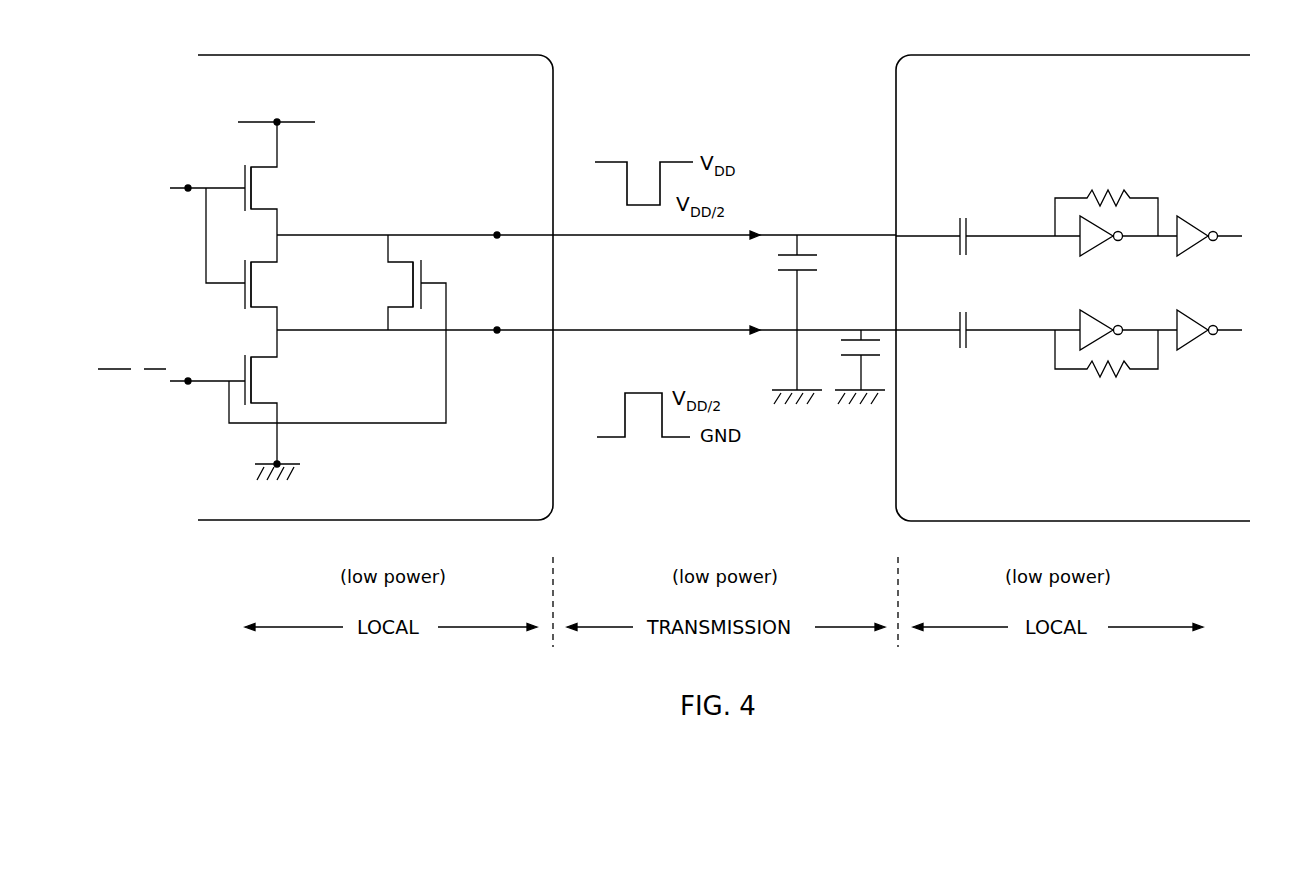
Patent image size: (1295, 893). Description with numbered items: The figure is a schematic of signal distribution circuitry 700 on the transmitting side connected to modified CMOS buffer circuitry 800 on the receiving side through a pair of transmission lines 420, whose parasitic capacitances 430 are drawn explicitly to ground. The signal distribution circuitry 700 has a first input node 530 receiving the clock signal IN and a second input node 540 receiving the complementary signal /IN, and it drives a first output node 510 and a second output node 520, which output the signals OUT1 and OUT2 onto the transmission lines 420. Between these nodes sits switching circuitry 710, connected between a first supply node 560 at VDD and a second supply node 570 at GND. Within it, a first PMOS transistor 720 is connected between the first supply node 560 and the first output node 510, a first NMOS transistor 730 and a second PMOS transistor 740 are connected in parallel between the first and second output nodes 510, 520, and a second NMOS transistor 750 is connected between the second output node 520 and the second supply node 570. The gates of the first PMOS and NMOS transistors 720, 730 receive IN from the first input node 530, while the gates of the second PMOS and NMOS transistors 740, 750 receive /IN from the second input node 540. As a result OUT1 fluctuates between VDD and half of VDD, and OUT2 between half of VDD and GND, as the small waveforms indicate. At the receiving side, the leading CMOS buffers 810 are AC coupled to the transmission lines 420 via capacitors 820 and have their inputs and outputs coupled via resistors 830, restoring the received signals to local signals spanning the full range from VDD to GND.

The signal distribution circuitry 700 is at (395, 55).
The modified CMOS buffer circuitry 800 is at (1012, 55).
The switching circuitry 710 is at (460, 151).
The first PMOS transistor 720 is at (278, 175).
The first NMOS transistor 730 is at (283, 285).
The second PMOS transistor 740 is at (384, 282).
The second NMOS transistor 750 is at (283, 367).
The first supply node 560 is at (275, 121).
The second supply node 570 is at (280, 463).
The first input node 530 is at (190, 186).
The second input node 540 is at (190, 379).
The first output node 510 is at (495, 233).
The second output node 520 is at (495, 328).
The transmission lines 420 is at (597, 238).
The parasitic capacitances 430 is at (785, 258).
The capacitors 820 is at (968, 233).
The leading CMOS buffers 810 is at (1090, 240).
The resistors 830 is at (1122, 196).